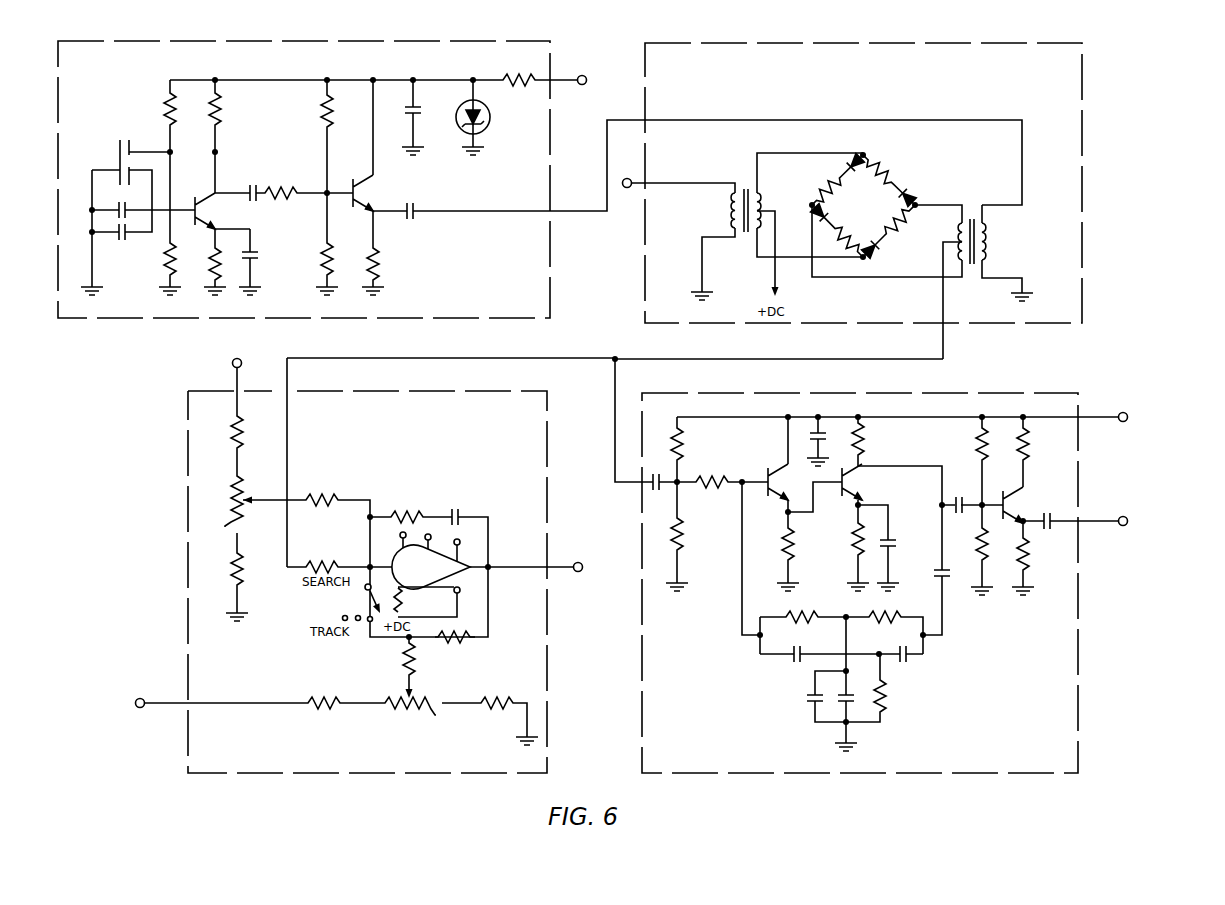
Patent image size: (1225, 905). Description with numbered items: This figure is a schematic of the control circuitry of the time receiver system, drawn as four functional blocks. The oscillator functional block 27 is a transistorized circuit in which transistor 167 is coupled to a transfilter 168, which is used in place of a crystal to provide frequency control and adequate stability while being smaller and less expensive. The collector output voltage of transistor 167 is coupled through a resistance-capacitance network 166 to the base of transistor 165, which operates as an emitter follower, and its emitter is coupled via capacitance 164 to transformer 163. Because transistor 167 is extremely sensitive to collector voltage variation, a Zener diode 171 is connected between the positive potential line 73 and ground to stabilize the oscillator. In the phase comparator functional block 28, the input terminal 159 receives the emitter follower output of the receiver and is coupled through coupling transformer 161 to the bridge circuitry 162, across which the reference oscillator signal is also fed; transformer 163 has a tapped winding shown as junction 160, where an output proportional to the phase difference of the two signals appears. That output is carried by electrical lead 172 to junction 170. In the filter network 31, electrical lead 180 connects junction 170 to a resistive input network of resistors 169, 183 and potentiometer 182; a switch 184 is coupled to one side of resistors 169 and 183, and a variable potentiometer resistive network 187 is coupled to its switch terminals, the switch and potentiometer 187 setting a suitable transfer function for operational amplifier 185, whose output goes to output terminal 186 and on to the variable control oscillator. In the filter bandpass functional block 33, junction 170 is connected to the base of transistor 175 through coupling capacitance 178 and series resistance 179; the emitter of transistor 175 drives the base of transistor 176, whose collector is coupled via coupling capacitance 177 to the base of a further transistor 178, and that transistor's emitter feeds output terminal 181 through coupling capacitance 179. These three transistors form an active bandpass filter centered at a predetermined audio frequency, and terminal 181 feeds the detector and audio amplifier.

The oscillator functional block 27 is at (385, 41).
The phase comparator functional block 28 is at (905, 43).
The filter network 31 is at (188, 550).
The filter bandpass functional block 33 is at (1078, 718).
The positive potential line 73 is at (585, 75).
The input terminal 159 is at (632, 178).
The junction 160 is at (958, 240).
The coupling transformer 161 is at (742, 184).
The bridge circuitry 162 is at (894, 166).
The transformer 163 is at (974, 215).
The capacitance 164 is at (414, 207).
The transistor 165 is at (356, 175).
The resistance-capacitance network 166 is at (263, 183).
The transistor 167 is at (190, 196).
The transfilter 168 is at (108, 156).
The resistor 169 is at (325, 562).
The junction 170 is at (618, 358).
The Zener diode 171 is at (492, 130).
The electrical lead 172 is at (690, 359).
The transistor 175 is at (777, 464).
The transistor 176 is at (833, 502).
The coupling capacitance 177 is at (957, 498).
The coupling capacitance / transistor 178 is at (650, 488).
The series resistance / coupling capacitance 179 is at (722, 478).
The electrical lead 180 is at (440, 358).
The output terminal 181 is at (1121, 516).
The potentiometer 182 is at (228, 497).
The resistor 183 is at (330, 494).
The switch 184 is at (360, 602).
The operational amplifier 185 is at (475, 555).
The output terminal 186 is at (580, 562).
The variable potentiometer resistive network 187 is at (403, 690).